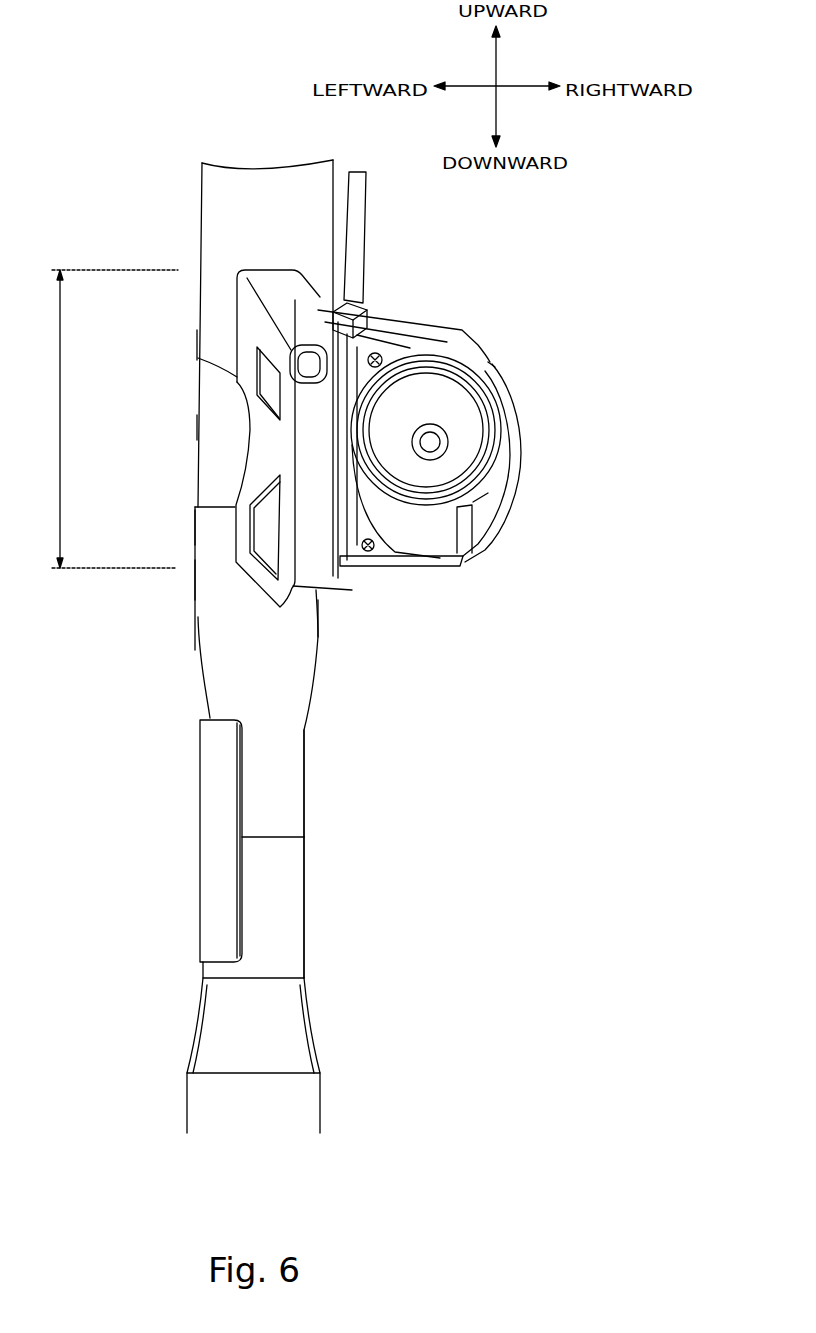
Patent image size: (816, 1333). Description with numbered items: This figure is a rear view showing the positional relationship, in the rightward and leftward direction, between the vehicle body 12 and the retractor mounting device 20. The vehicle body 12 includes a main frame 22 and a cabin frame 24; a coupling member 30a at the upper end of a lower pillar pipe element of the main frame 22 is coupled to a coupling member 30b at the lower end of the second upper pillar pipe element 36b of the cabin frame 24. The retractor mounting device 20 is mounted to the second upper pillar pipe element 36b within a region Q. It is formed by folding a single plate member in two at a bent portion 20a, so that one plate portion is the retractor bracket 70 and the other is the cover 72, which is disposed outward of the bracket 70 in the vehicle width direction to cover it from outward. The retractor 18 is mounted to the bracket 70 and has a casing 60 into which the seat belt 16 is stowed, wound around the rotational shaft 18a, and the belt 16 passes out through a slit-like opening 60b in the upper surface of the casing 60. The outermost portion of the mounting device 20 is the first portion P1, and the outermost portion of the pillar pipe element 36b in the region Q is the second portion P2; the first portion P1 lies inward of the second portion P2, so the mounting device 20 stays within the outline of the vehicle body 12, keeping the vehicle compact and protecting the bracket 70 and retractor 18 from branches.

The vehicle body 12 is at (197, 1002).
The seat belt 16 is at (369, 246).
The retractor 18 is at (468, 323).
The rotational shaft 18a is at (430, 442).
The retractor mounting device 20 is at (250, 598).
The bent portion 20a is at (327, 630).
The main frame 22 is at (170, 1092).
The cabin frame (ROPS) 24 is at (193, 677).
The coupling member 30a is at (285, 918).
The coupling member 30b is at (278, 798).
The second upper pillar pipe element 36b is at (205, 582).
The casing 60 is at (473, 418).
The opening 60b is at (358, 292).
The retractor bracket 70 is at (315, 293).
The cover 72 is at (248, 308).
The first portion P1 is at (237, 348).
The second portion P2 is at (198, 428).
The region Q is at (107, 419).